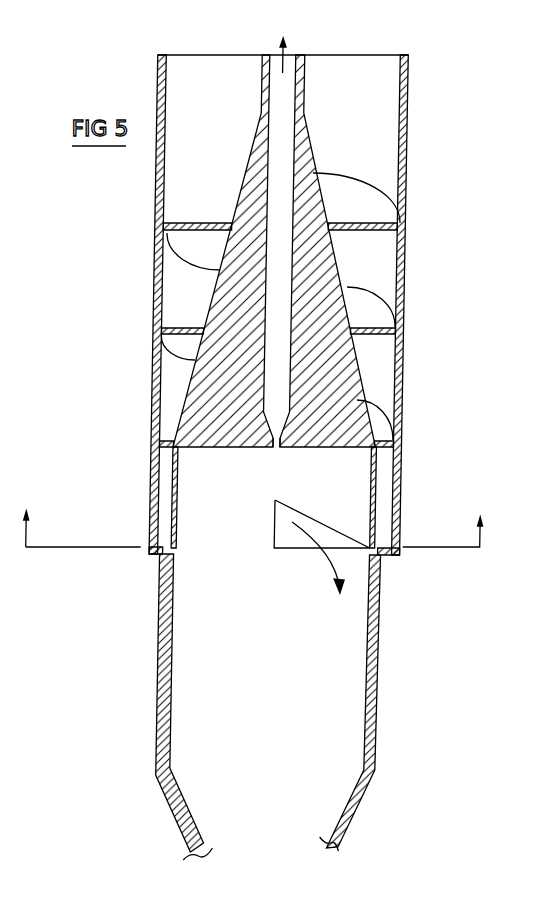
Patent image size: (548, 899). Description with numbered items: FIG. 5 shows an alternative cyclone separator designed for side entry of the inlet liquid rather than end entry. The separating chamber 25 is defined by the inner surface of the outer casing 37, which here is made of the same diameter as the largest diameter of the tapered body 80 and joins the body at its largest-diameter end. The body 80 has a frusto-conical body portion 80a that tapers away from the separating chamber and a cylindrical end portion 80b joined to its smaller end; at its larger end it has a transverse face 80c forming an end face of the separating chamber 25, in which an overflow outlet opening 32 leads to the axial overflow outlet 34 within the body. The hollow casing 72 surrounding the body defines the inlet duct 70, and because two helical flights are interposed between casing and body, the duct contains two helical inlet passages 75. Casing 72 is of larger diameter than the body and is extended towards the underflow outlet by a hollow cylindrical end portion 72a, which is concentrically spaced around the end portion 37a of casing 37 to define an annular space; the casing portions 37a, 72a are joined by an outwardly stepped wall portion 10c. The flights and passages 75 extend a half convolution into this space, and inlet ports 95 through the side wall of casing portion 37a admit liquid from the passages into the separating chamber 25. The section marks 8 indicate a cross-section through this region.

The inlet duct 70 is at (340, 92).
The hollow casing 72 is at (399, 290).
The hollow cylindrical end portion 72a is at (444, 503).
The axial overflow outlet 34 is at (273, 167).
The cylindrical end portion 80b is at (302, 98).
The helical inlet passage 75 is at (194, 335).
The tapered body 80 is at (350, 287).
The frusto-conical body portion 80a is at (360, 406).
The transverse face 80c is at (326, 448).
The overflow outlet opening 32 is at (278, 448).
The end portion of casing 37a is at (377, 514).
The outwardly stepped wall portion 10c is at (157, 553).
The inlet ports 95 is at (302, 535).
The separating chamber 25 is at (285, 690).
The outer casing 37 is at (387, 697).
The section line 8- 8 is at (262, 528).